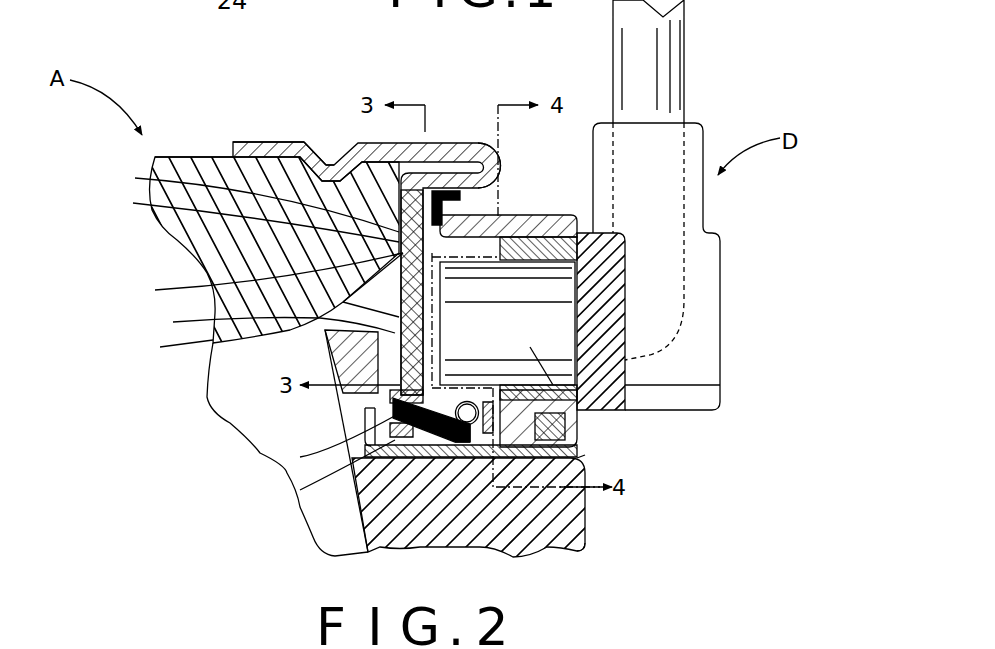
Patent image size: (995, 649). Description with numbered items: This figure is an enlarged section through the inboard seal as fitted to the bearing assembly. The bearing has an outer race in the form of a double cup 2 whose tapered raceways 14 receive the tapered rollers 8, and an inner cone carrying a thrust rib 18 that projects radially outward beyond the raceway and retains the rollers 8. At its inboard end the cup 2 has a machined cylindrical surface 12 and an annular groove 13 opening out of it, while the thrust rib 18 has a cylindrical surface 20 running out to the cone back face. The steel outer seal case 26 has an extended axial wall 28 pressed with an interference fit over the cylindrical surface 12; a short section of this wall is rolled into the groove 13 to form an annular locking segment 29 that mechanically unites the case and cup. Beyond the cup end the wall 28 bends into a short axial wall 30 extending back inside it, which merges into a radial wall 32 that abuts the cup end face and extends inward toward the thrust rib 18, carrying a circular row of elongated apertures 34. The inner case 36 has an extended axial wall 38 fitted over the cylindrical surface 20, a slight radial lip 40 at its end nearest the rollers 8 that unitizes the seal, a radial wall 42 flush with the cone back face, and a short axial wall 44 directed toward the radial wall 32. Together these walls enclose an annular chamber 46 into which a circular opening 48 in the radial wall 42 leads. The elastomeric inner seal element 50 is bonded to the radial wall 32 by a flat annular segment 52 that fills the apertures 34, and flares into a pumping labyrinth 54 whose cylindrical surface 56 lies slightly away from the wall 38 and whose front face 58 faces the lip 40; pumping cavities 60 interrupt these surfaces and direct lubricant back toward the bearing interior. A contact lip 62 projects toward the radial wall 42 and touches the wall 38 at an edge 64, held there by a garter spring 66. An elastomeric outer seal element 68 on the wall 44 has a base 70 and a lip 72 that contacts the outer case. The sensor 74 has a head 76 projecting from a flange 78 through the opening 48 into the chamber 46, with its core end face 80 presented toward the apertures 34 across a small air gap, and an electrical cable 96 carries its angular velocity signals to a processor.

The cup 2 is at (183, 217).
The tapered rollers 8 is at (223, 397).
The cylindrical surface 12 is at (197, 157).
The annular groove 13 is at (313, 141).
The raceways 14 is at (207, 372).
The thrust rib 18 is at (307, 530).
The cylindrical surface 20 is at (553, 457).
The outer seal case 26 is at (500, 180).
The extended axial wall 28 is at (265, 142).
The annular locking segment 29 is at (333, 166).
The short axial wall 30 is at (470, 143).
The radial wall 32 is at (251, 215).
The elongated apertures 34 is at (269, 325).
The inner case 36 is at (585, 455).
The extended axial wall 38 is at (585, 550).
The radial lip 40 is at (300, 457).
The radial wall 42 is at (582, 418).
The short axial wall 44 is at (527, 215).
The annular chamber 46 is at (264, 278).
The circular opening 48 is at (558, 277).
The inner seal element 50 is at (423, 447).
The flat annular segment 52 is at (170, 347).
The pumping labyrinth 54 is at (388, 397).
The cylindrical surface 56 is at (397, 460).
The front face 58 is at (365, 427).
The pumping cavities 60 is at (300, 490).
The contact lip 62 is at (510, 460).
The edge 64 is at (500, 460).
The garter spring 66 is at (463, 458).
The outer seal element 68 is at (252, 198).
The base 70 is at (497, 213).
The lip 72 is at (432, 188).
The sensor 74 is at (705, 287).
The head 76 is at (580, 428).
The flange 78 is at (700, 385).
The end face 80 is at (332, 348).
The electrical cable 96 is at (684, 40).